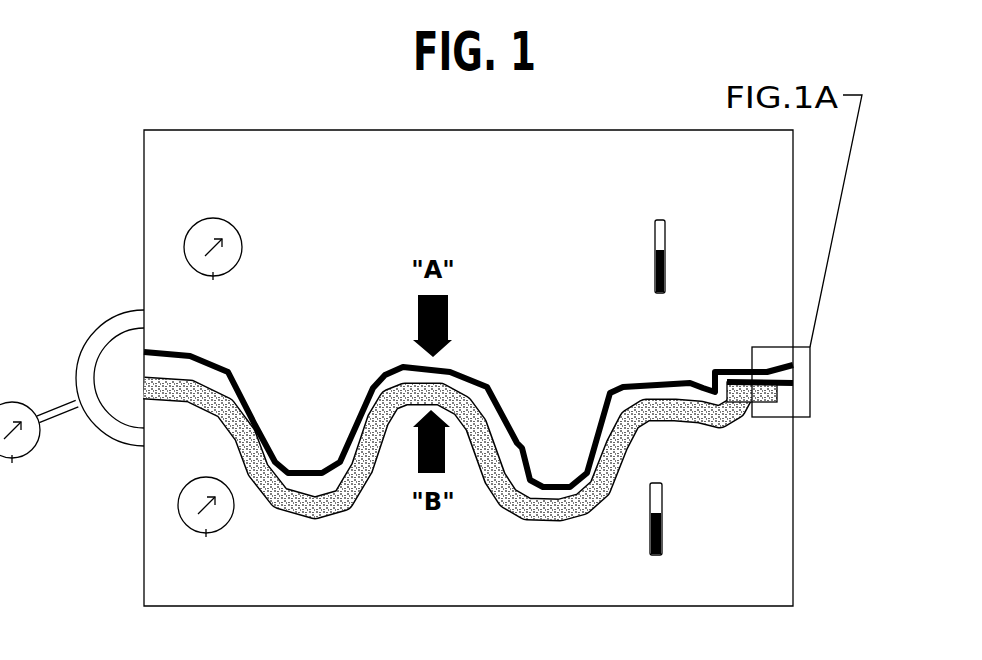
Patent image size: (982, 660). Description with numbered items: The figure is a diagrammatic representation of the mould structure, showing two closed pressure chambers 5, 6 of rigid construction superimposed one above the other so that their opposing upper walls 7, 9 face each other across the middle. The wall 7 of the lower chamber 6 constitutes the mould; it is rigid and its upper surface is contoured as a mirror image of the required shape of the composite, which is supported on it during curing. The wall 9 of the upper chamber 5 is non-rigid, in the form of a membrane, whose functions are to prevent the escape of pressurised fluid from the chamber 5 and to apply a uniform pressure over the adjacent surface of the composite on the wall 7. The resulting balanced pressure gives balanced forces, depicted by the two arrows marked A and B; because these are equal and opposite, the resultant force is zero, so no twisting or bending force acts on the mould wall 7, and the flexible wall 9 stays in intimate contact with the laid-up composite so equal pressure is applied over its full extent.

The upper pressure chamber 5 is at (396, 306).
The lower pressure chamber 6 is at (467, 519).
The wall of lower chamber 7 is at (460, 481).
The wall of upper chamber 9 is at (468, 406).